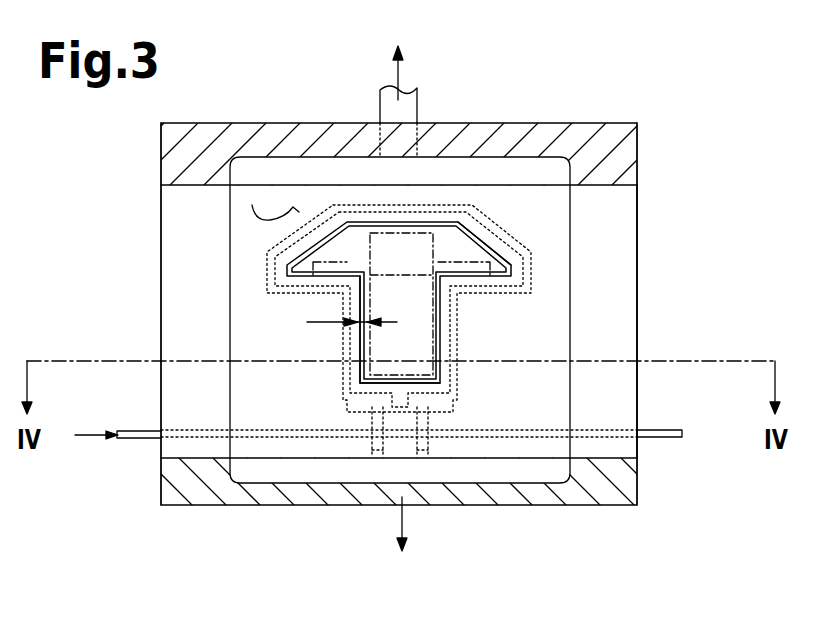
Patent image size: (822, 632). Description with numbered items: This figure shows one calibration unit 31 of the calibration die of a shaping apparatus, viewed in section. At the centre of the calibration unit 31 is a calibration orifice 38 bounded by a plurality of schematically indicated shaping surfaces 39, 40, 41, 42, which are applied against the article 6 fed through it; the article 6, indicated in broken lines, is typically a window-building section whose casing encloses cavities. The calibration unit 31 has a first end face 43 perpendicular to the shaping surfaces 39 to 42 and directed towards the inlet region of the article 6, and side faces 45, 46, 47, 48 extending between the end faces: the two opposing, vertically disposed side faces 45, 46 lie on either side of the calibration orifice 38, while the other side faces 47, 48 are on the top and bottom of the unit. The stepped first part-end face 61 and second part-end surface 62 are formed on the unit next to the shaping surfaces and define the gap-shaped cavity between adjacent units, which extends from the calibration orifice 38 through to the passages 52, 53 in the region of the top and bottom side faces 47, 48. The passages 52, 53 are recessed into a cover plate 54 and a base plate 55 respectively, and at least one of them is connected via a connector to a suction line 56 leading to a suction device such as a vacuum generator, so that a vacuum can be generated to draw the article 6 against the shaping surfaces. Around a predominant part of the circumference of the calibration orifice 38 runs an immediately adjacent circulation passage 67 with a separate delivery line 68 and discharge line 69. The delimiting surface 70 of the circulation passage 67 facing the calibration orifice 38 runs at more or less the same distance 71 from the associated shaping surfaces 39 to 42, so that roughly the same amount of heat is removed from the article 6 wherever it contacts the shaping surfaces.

The article 6 is at (368, 312).
The calibration unit 31 is at (188, 243).
The calibration orifice 38 is at (440, 233).
The shaping surface 39 is at (406, 384).
The shaping surface 40 is at (375, 341).
The shaping surface 41 is at (336, 221).
The shaping surface 42 is at (472, 243).
The first end face 43 is at (612, 232).
The side face 45 is at (161, 306).
The side face 46 is at (637, 283).
The side face 47 is at (518, 174).
The side face 48 is at (517, 465).
The passage 52 is at (417, 246).
The passage 53 is at (493, 483).
The base plate 55 is at (615, 487).
The cover plate 54 is at (295, 137).
The suction line 56 is at (407, 107).
The first part-end face 61 is at (420, 385).
The second part-end surface 62 is at (252, 205).
The circulation passage 67 is at (497, 243).
The delivery line 68 is at (140, 430).
The discharge line 69 is at (667, 440).
The delimiting surface 70 is at (347, 387).
The distance 71 is at (322, 312).